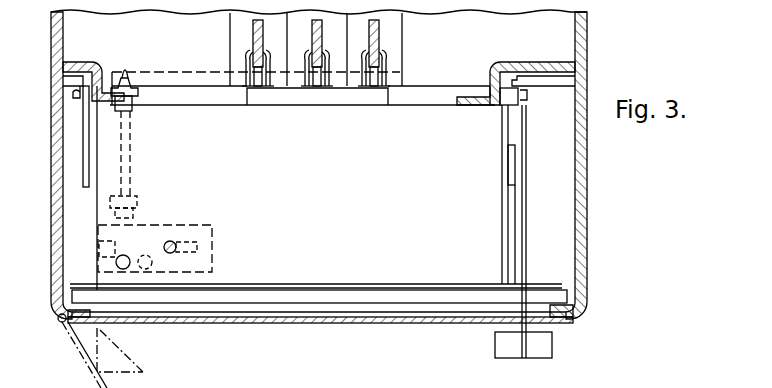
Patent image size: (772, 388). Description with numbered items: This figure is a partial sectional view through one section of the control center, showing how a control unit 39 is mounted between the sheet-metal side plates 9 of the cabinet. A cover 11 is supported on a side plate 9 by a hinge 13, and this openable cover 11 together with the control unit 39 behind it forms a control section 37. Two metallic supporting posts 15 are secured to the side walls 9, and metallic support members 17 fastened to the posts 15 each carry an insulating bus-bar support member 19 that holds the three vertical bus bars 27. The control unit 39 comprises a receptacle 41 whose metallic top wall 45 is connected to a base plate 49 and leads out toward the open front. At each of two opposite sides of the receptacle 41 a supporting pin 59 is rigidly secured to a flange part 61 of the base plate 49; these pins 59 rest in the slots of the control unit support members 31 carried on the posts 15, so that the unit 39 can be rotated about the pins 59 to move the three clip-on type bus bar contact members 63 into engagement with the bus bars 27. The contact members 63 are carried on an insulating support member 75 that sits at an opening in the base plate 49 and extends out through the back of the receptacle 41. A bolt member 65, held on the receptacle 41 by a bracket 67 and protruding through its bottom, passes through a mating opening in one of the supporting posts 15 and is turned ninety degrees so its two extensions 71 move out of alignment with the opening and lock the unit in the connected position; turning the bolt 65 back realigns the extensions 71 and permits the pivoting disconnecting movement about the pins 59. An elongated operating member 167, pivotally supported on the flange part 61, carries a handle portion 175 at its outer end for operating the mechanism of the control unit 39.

The side plate 9 is at (51, 185).
The cover 11 is at (80, 348).
The hinge 13 is at (57, 318).
The supporting post 15 is at (63, 31).
The support member 17 is at (436, 90).
The insulating bus-bar support member 19 is at (402, 30).
The vertical bus bar 27 is at (253, 28).
The control unit support member 31 is at (83, 140).
The control section 37 is at (319, 322).
The control unit 39 is at (332, 200).
The receptacle 41 is at (100, 202).
The top wall 45 is at (527, 252).
The base plate 49 is at (169, 92).
The supporting pin 59 is at (76, 98).
The flange part 61 is at (100, 104).
The clip-on type bus bar contact member 63 is at (246, 60).
The bolt member 65 is at (133, 214).
The bracket 67 is at (137, 202).
The extension 71 is at (125, 75).
The insulating support member 75 is at (370, 97).
The operating member 167 is at (520, 212).
The handle portion 175 is at (553, 351).